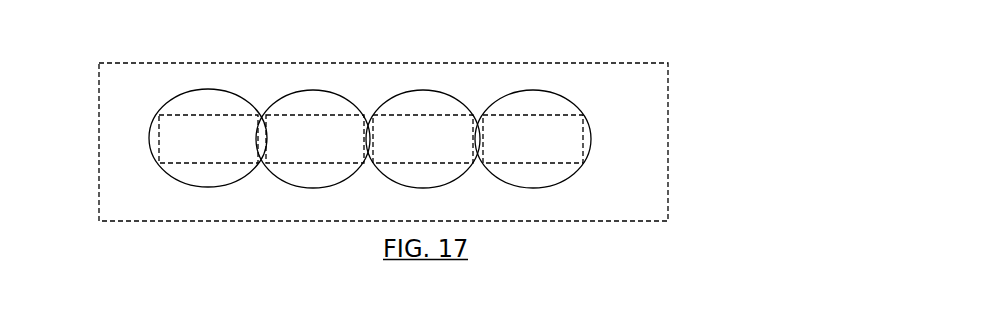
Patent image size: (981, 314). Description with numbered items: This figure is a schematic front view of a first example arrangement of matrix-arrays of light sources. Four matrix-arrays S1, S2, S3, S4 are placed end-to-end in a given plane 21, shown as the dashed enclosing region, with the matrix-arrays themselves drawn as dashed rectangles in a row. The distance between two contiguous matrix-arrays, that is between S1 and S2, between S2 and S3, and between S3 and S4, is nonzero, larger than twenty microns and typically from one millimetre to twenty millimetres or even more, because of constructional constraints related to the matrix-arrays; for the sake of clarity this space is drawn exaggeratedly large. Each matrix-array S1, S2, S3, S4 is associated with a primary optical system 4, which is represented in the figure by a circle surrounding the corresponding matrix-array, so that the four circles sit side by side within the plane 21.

The primary optical system 4 is at (452, 139).
The plane 21 is at (158, 212).
The matrix-array S1 is at (208, 138).
The matrix-array S2 is at (313, 139).
The matrix-array S3 is at (423, 139).
The matrix-array S4 is at (533, 139).